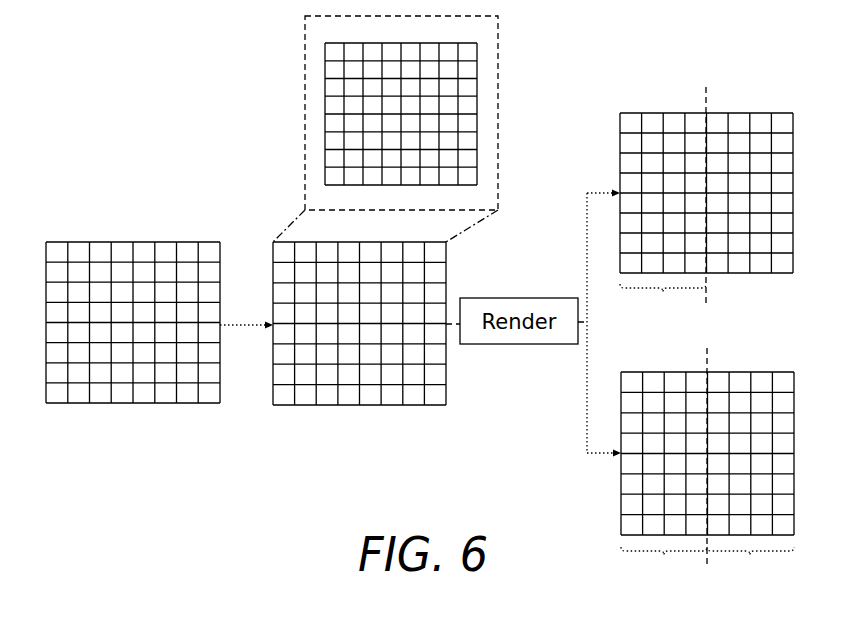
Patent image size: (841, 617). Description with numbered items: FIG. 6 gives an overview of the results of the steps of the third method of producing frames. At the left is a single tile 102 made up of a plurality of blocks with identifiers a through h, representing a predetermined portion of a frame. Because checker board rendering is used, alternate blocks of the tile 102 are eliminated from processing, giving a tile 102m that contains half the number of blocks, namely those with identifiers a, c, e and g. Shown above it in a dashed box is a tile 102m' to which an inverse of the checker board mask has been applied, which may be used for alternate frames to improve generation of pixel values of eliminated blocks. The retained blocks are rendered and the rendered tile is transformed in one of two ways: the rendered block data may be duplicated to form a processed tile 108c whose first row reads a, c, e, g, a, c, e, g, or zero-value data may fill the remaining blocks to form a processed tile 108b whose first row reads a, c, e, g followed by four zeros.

The tile 102 is at (130, 242).
The tile 102m is at (359, 334).
The tile 102m' is at (415, 129).
The processed tile 108b is at (703, 106).
The processed tile 108c is at (703, 368).